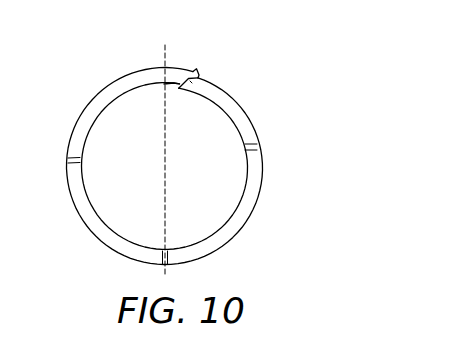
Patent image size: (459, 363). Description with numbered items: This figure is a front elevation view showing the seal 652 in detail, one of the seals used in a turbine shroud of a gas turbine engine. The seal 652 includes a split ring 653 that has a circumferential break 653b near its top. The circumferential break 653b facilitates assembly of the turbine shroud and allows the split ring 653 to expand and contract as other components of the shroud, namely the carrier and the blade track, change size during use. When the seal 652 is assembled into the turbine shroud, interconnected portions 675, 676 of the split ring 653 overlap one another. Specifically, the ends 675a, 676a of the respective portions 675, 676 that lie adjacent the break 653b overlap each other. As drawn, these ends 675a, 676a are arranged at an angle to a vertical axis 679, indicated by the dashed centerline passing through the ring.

The seal 652 is at (265, 35).
The split ring 653 is at (258, 130).
The circumferential break 653b is at (191, 51).
The interconnected portion 675 is at (79, 211).
The end of portion 675a is at (211, 75).
The interconnected portion 676 is at (270, 179).
The end of portion 676a is at (173, 89).
The vertical axis 679 is at (165, 172).